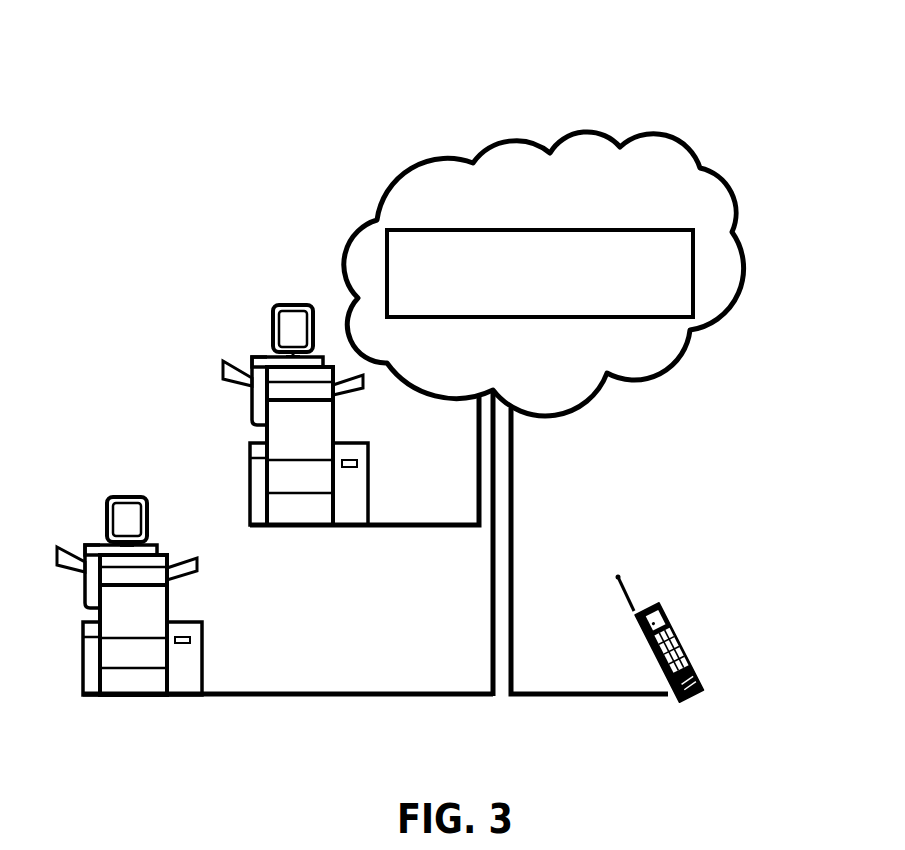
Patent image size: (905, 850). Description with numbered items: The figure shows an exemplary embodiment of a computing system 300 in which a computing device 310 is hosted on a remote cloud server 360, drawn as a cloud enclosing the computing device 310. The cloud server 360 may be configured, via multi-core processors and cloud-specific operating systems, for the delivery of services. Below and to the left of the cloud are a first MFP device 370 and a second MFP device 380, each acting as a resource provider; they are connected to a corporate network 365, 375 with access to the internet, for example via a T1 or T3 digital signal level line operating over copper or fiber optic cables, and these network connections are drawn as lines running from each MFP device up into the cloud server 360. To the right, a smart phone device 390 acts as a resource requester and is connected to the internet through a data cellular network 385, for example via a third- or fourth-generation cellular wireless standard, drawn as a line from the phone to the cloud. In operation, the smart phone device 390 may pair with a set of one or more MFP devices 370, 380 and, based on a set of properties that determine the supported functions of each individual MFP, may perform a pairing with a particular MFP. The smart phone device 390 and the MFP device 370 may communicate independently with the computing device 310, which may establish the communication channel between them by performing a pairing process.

The computing system 300 is at (754, 104).
The computing device 310 is at (677, 304).
The cloud server 360 is at (690, 332).
The corporate network 365 is at (398, 691).
The first MFP device 370 is at (123, 497).
The corporate network 375 is at (447, 523).
The second MFP device 380 is at (292, 305).
The data cellular network 385 is at (513, 598).
The smart phone device 390 is at (687, 645).